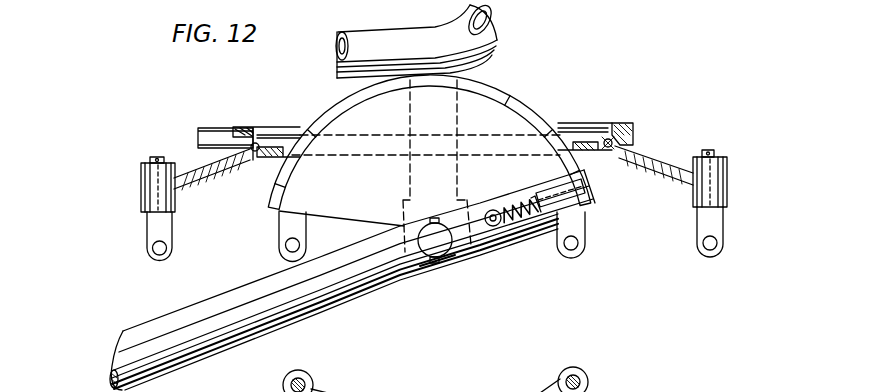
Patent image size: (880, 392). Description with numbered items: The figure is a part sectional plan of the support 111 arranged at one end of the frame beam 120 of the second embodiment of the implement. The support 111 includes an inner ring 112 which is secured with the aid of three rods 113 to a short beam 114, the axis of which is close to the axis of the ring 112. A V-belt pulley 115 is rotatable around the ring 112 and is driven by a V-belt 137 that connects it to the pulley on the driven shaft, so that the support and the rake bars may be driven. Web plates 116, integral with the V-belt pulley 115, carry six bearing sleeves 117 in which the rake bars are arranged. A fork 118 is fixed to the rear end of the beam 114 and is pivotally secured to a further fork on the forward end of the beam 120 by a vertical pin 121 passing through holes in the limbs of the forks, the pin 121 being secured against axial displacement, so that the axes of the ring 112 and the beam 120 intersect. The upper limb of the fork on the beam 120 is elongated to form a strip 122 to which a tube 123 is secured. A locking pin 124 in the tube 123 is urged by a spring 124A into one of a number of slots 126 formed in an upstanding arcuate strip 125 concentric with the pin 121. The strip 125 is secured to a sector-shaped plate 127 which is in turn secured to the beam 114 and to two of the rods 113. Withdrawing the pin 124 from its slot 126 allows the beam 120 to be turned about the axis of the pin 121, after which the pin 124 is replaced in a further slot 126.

The support 111 is at (610, 155).
The inner ring 112 is at (598, 138).
The rods 113 is at (278, 135).
The short beam 114 is at (409, 114).
The V-belt pulley 115 is at (622, 124).
The web plates 116 is at (657, 155).
The bearing sleeves 117 is at (696, 197).
The fork 118 is at (445, 268).
The frame beam 120 is at (357, 288).
The vertical pin 121 is at (441, 249).
The strip 122 is at (500, 226).
The tube 123 is at (560, 195).
The locking pin 124 is at (505, 234).
The spring 124A is at (541, 222).
The upstanding arcuate strip 125 is at (543, 118).
The slots 126 is at (510, 97).
The sector-shaped plate 127 is at (349, 220).
The V-belt 137 is at (210, 138).